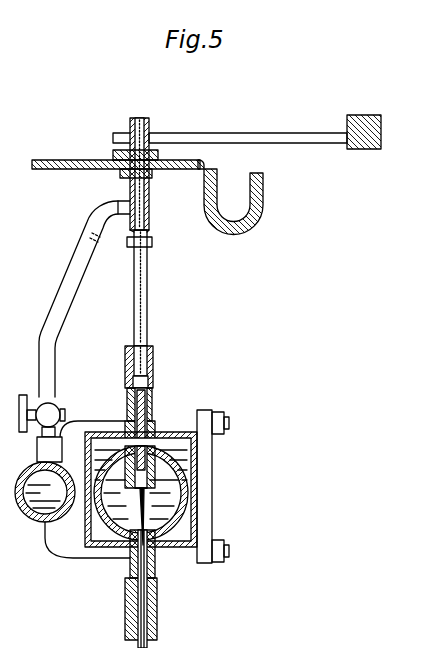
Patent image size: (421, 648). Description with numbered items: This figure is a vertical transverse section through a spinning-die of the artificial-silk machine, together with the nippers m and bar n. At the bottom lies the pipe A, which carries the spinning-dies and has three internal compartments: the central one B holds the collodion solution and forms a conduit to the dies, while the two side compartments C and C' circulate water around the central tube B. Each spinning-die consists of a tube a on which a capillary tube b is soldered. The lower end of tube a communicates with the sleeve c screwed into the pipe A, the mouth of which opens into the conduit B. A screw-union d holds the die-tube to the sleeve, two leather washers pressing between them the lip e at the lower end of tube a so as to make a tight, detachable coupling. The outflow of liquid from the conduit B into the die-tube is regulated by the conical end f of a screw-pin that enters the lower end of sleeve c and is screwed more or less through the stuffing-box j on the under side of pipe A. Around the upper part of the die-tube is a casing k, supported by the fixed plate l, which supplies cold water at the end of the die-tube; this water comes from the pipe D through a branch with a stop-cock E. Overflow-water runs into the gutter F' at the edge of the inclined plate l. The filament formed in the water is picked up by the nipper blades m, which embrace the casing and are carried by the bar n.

The capillary tube b is at (143, 119).
The casing k is at (149, 193).
The nipper blades m is at (230, 131).
The bar n is at (364, 121).
The fixed plate l is at (74, 164).
The gutter F' is at (230, 197).
The die-tube a is at (145, 288).
The screw-union d is at (150, 358).
The lip e is at (149, 380).
The sleeve c is at (144, 438).
The conical end f is at (139, 505).
The stop-cock E is at (42, 428).
The water pipe D is at (45, 492).
The stuffing-box j is at (87, 544).
The pipe A is at (204, 490).
The side compartment C is at (141, 489).
The side compartment C' is at (174, 494).
The central compartment B is at (141, 493).